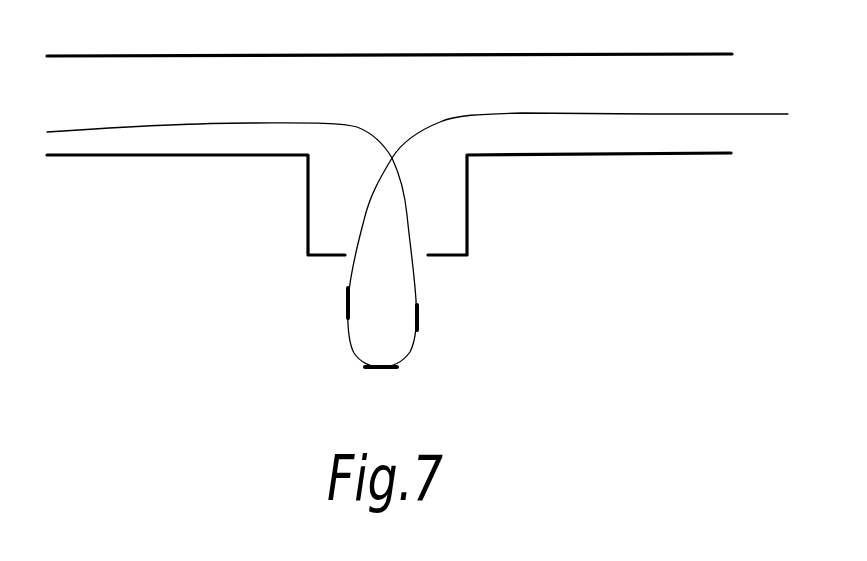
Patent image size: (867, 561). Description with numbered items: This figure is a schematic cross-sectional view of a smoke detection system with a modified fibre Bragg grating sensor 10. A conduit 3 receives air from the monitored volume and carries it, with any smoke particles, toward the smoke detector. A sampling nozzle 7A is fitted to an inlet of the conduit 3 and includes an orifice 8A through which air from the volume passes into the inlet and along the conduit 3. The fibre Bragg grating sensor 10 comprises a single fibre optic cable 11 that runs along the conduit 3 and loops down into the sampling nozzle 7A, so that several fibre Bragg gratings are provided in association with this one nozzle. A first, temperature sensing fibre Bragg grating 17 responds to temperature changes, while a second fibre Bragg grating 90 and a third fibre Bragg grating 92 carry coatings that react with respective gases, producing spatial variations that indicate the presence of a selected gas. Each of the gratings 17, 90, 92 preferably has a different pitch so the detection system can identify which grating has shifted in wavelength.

The conduit 3 is at (275, 54).
The sampling nozzle 7A is at (468, 216).
The orifice 8A is at (350, 251).
The fibre Bragg grating sensor 10 is at (522, 112).
The fibre optic cable 11 is at (653, 113).
The temperature sensing fibre Bragg grating 17 is at (346, 304).
The third fibre Bragg grating 92 is at (419, 322).
The second fibre Bragg grating 90 is at (385, 368).